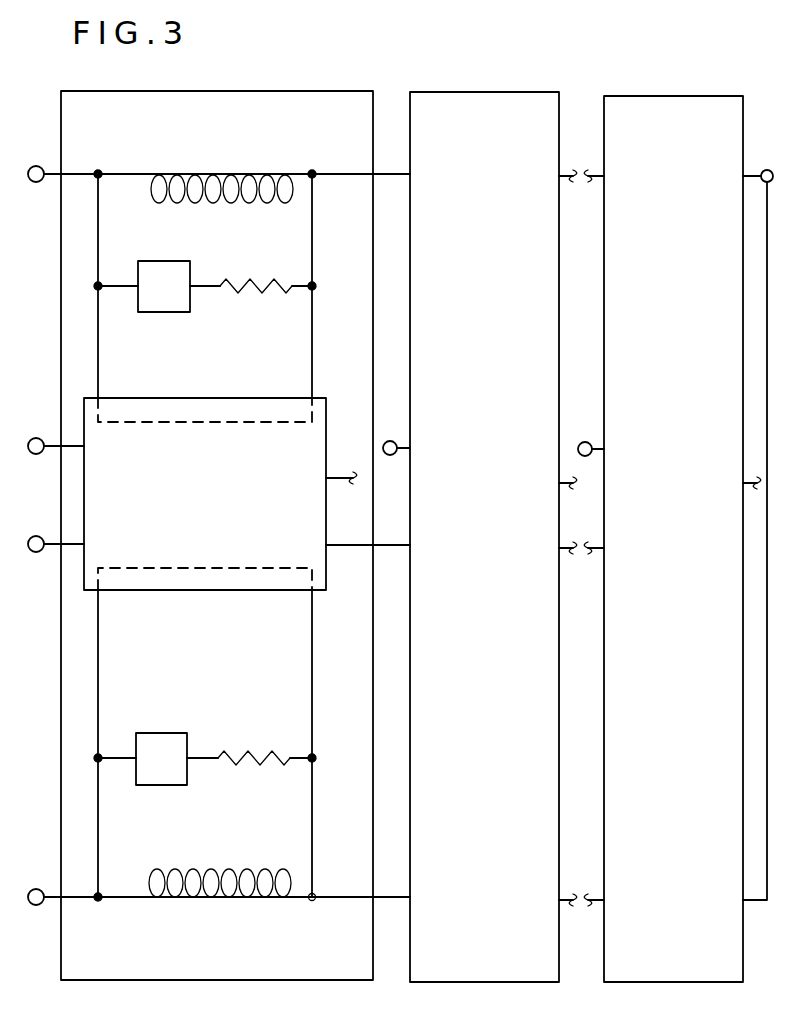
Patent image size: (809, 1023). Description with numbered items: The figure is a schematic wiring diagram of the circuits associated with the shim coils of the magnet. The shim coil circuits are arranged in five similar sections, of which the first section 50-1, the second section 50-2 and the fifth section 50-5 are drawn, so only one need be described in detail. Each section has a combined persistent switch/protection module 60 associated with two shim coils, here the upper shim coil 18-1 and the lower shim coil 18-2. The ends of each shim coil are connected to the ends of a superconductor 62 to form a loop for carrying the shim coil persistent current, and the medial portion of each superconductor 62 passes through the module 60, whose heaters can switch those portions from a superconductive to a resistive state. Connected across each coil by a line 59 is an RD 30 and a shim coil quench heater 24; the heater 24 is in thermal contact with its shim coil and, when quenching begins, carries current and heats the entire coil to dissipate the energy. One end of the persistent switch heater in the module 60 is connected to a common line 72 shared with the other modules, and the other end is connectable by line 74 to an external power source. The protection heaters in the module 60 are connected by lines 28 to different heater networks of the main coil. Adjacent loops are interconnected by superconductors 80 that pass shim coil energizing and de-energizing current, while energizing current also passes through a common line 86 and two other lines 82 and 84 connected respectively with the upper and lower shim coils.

The shim coil circuit section 50-1 is at (216, 91).
The shim coil circuit section 50-2 is at (526, 92).
The shim coil circuit section 50-5 is at (712, 96).
The superconductor 80 is at (563, 175).
The line 82 is at (77, 174).
The line 84 is at (73, 895).
The line 74 is at (72, 446).
The common line 72 is at (72, 545).
The common line 86 is at (767, 170).
The superconductor 62 is at (312, 363).
The persistent switch/protection module 60 is at (220, 591).
The line 28 is at (337, 480).
The shim coil 18-1 is at (235, 174).
The shim coil 18-2 is at (202, 898).
The line 59 is at (113, 286).
The RD 30 is at (158, 305).
The shim coil quench heater 24 is at (240, 286).